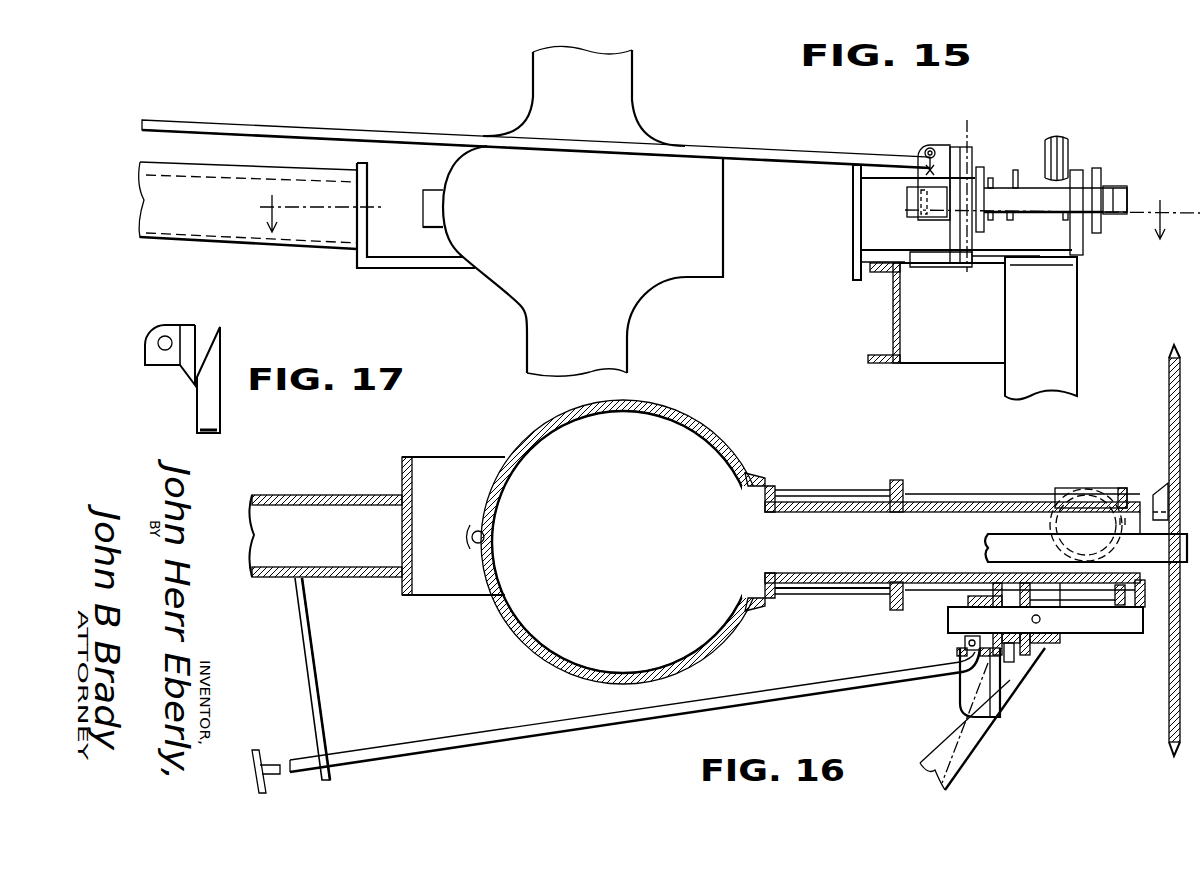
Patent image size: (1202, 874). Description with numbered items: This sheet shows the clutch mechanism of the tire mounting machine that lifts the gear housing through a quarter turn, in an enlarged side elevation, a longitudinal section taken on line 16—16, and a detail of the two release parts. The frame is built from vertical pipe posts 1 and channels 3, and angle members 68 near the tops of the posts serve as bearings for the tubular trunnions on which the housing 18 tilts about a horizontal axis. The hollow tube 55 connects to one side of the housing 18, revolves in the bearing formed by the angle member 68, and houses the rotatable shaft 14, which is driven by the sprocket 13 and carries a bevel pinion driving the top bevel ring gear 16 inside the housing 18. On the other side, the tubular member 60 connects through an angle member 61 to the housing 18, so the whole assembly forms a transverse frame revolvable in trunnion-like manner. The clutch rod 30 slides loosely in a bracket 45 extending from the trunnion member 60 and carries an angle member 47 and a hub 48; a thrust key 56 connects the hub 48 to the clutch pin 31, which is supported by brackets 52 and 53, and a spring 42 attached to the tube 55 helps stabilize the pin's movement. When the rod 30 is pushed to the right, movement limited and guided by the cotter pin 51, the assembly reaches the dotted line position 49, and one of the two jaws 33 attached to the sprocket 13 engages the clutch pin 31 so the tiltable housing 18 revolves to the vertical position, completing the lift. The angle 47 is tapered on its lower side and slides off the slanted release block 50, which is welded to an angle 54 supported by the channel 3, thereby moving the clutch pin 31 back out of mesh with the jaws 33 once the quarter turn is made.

In FIG. 15, the pipe posts 1 is at (1068, 322).
In FIG. 16, the pipe posts 1 is at (1077, 498).
In FIG. 15, the channels 3 is at (950, 353).
In FIG. 16, the channels 3 is at (970, 757).
In FIG. 16, the sprocket 13 is at (1166, 400).
In FIG. 16, the shaft 14 is at (1003, 537).
In FIG. 15, the top bevel ring gear 16 is at (714, 216).
In FIG. 15, the housing 18 is at (557, 278).
In FIG. 16, the housing 18 is at (700, 428).
In FIG. 15, the clutch rod 30 is at (623, 156).
In FIG. 16, the clutch rod 30 is at (481, 740).
In FIG. 15, the clutch pin 31 is at (900, 194).
In FIG. 16, the jaws 33 is at (1153, 482).
In FIG. 15, the spring 42 is at (1059, 140).
In FIG. 16, the bracket 45 is at (308, 673).
In FIG. 15, the angle member 47 is at (947, 145).
In FIG. 17, the angle member 47 is at (180, 376).
In FIG. 16, the angle member 47 is at (986, 588).
In FIG. 15, the hub 48 is at (933, 223).
In FIG. 16, the hub 48 is at (968, 596).
In FIG. 15, the dotted line position 49 is at (965, 150).
In FIG. 15, the slanted release block 50 is at (965, 252).
In FIG. 17, the slanted release block 50 is at (213, 415).
In FIG. 16, the slanted release block 50 is at (1010, 665).
In FIG. 15, the cotter pin 51 is at (996, 176).
In FIG. 16, the cotter pin 51 is at (1097, 633).
In FIG. 15, the bracket 52 is at (983, 168).
In FIG. 16, the bracket 52 is at (1022, 657).
In FIG. 15, the bracket 53 is at (1094, 166).
In FIG. 16, the bracket 53 is at (1143, 637).
In FIG. 16, the angle 54 is at (960, 687).
In FIG. 15, the hollow tube 55 is at (875, 246).
In FIG. 16, the hollow tube 55 is at (973, 487).
In FIG. 16, the thrust key 56 is at (963, 610).
In FIG. 15, the tubular member 60 is at (181, 230).
In FIG. 16, the tubular member 60 is at (308, 512).
In FIG. 15, the angle member 61 is at (426, 270).
In FIG. 16, the angle member 61 is at (448, 482).
In FIG. 15, the angle member 68 is at (1080, 257).
In FIG. 16, the angle member 68 is at (1087, 490).